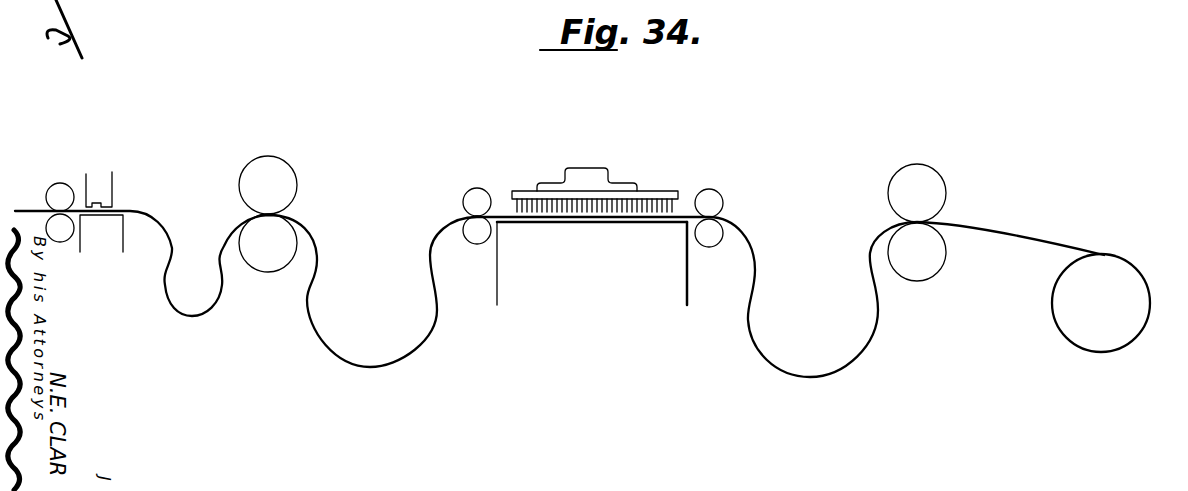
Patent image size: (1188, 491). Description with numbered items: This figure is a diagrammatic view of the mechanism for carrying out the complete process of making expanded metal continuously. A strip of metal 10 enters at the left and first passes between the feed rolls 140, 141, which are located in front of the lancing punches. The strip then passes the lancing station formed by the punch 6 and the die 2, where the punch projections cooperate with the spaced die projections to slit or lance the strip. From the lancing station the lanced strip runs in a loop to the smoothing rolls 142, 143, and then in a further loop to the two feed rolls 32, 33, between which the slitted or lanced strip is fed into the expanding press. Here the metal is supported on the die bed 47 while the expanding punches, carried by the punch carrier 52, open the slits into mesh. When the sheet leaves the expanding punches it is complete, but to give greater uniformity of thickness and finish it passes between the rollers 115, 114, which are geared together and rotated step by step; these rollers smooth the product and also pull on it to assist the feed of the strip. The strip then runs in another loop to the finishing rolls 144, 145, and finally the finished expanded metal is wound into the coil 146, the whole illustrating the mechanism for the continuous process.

The web of material 10 is at (26, 210).
The punch 6 is at (99, 189).
The die 2 is at (101, 233).
The feed roll 140 is at (61, 190).
The feed roll 141 is at (62, 235).
The smoothing roll 142 is at (272, 163).
The smoothing roll 143 is at (268, 258).
The feed roll 32 is at (477, 192).
The feed roll 33 is at (478, 240).
The punch carrier 52 is at (613, 195).
The die bed 47 is at (592, 263).
The roller 115 is at (709, 200).
The roller 114 is at (708, 240).
The finishing roll 144 is at (935, 192).
The finishing roll 145 is at (925, 270).
The coil of finished expanded metal 146 is at (1088, 337).